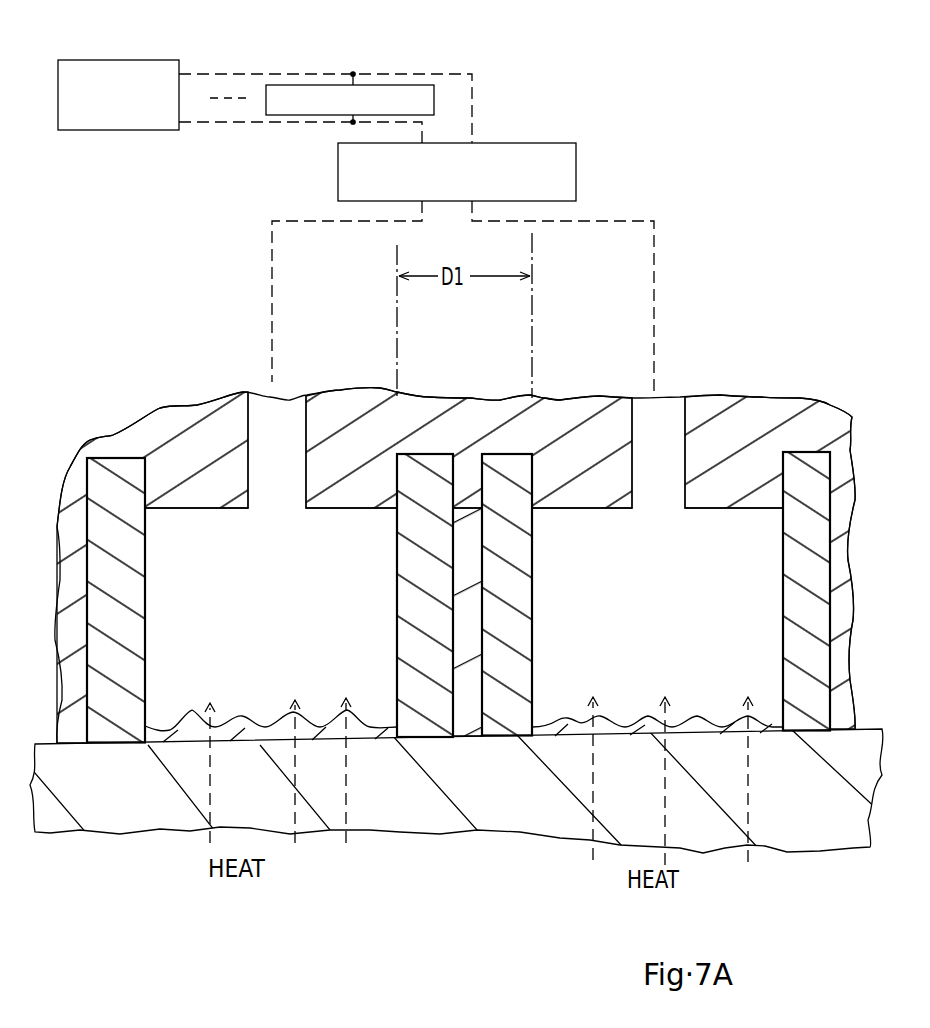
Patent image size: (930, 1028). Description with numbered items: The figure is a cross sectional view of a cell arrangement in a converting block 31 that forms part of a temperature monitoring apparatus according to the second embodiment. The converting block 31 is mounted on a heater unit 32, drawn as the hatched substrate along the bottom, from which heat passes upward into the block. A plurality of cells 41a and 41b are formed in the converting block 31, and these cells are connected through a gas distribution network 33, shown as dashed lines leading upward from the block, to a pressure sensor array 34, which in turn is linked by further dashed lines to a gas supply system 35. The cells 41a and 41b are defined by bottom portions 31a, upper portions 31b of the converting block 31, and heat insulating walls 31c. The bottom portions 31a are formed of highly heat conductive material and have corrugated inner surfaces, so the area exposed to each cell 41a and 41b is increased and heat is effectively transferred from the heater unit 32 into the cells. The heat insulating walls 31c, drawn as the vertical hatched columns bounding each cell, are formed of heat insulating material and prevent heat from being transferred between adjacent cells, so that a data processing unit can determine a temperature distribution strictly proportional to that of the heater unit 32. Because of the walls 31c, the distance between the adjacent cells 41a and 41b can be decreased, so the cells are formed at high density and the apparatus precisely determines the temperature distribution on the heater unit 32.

The converting block 31 is at (781, 398).
The bottom portions 31a is at (182, 733).
The upper portions 31b is at (228, 488).
The heat insulating walls 31c is at (112, 472).
The heater unit 32 is at (480, 830).
The gas distribution network 33 is at (601, 102).
The pressure sensor array 34 is at (425, 62).
The gas supply system 35 is at (167, 60).
The cell 41a is at (282, 615).
The cell 41b is at (673, 615).